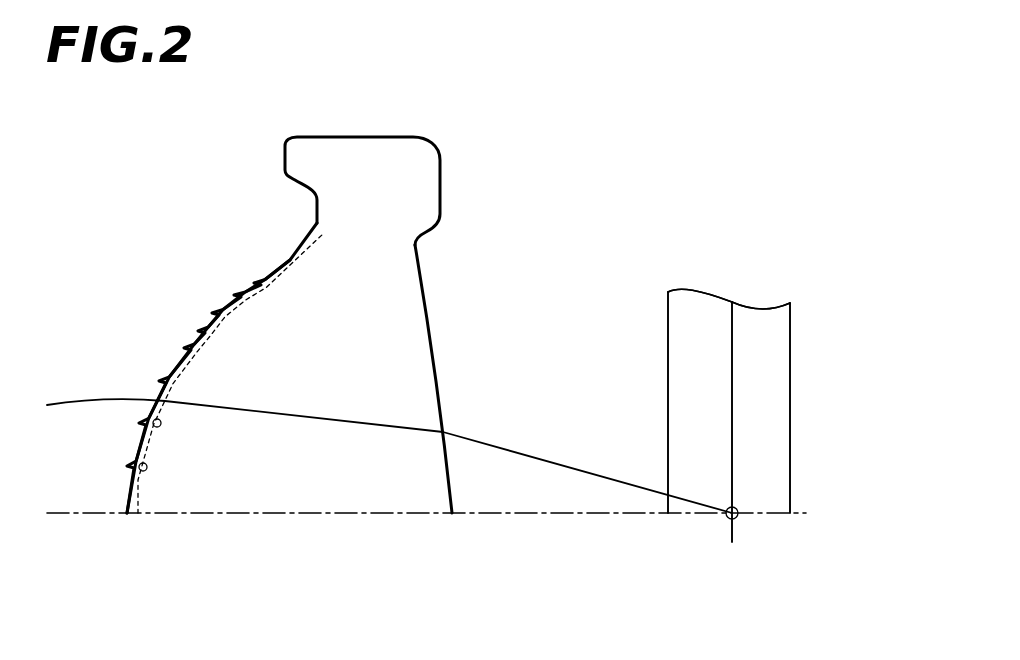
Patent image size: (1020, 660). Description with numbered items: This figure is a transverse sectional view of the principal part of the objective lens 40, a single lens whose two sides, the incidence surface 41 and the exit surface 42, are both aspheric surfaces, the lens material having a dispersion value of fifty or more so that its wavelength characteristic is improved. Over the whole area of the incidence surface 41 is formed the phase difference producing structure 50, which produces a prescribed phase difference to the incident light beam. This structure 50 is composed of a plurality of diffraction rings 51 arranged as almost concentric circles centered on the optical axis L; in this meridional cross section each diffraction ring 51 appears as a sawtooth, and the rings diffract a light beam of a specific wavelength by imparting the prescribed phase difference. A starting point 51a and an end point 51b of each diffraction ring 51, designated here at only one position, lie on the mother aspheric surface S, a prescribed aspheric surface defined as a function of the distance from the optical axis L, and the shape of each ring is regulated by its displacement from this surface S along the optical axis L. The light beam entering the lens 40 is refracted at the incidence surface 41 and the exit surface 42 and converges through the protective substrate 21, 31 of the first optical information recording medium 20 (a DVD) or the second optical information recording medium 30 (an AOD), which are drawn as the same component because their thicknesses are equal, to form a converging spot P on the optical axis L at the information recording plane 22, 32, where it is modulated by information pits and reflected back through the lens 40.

The objective lens 40 is at (400, 148).
The incidence surface 41 is at (245, 276).
The exit surface 42 is at (440, 327).
The phase difference producing structure 50 is at (184, 356).
The diffraction rings 51 is at (257, 285).
The starting point 51a is at (139, 468).
The end point 51b is at (152, 424).
The first optical information recording medium 20 is at (773, 450).
The second optical information recording medium 30 is at (773, 450).
The protective substrate 21 is at (688, 325).
The protective substrate 31 is at (688, 325).
The information recording plane 22 is at (733, 373).
The information recording plane 32 is at (733, 373).
The mother aspheric surface S is at (140, 496).
The optical axis L is at (318, 515).
The converging spot P is at (729, 518).